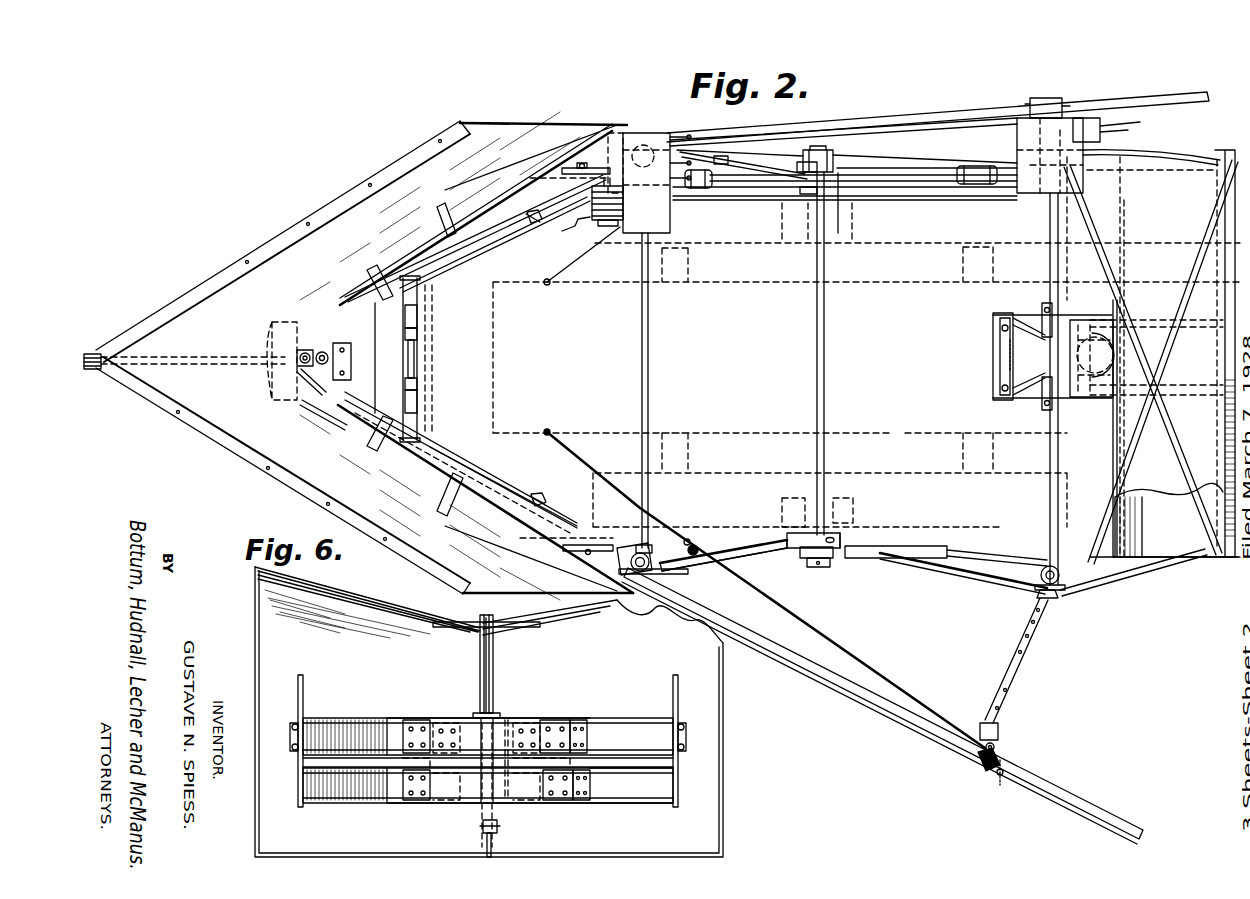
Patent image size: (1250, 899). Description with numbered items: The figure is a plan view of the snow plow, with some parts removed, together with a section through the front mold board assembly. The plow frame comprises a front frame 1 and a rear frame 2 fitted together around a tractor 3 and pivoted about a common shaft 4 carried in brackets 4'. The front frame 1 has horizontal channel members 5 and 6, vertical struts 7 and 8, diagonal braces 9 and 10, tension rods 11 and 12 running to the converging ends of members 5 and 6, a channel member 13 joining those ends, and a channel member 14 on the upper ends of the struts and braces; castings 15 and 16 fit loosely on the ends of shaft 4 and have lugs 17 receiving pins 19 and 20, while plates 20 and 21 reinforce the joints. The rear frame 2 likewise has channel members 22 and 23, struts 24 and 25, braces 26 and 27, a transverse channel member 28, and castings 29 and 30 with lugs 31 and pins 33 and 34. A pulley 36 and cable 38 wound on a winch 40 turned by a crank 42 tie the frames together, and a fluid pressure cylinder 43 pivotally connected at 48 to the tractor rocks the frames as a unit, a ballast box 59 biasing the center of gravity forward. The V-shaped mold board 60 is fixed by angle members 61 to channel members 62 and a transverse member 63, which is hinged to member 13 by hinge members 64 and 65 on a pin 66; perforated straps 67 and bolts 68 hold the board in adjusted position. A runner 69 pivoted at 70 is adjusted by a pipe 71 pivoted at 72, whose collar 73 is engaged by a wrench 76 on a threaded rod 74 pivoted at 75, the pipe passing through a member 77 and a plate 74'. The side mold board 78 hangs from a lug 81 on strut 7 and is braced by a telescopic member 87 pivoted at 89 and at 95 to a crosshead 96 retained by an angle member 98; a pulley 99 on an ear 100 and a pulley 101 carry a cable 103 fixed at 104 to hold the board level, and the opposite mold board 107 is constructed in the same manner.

In FIG. 2, the front frame 1 is at (642, 134).
In FIG. 2, the rear frame 2 is at (1046, 97).
In FIG. 2, the tractor 3 is at (905, 434).
In FIG. 2, the shaft 4 is at (967, 350).
In FIG. 2, the bearing members or brackets 4' is at (809, 365).
In FIG. 2, the horizontal channel member 5 is at (687, 539).
In FIG. 6, the horizontal channel member 5 is at (347, 800).
In FIG. 2, the horizontal channel member 6 is at (718, 158).
In FIG. 6, the horizontal channel member 6 is at (647, 796).
In FIG. 2, the vertical strut 7 is at (648, 548).
In FIG. 2, the vertical strut 8 is at (657, 140).
In FIG. 2, the diagonal brace 9 is at (728, 560).
In FIG. 2, the diagonal brace 10 is at (748, 166).
In FIG. 2, the tension rod 11 is at (520, 488).
In FIG. 2, the tension rod 12 is at (518, 233).
In FIG. 2, the channel member 13 is at (420, 332).
In FIG. 6, the channel member 13 is at (470, 797).
In FIG. 2, the channel member 14 is at (641, 330).
In FIG. 2, the casting 15 is at (795, 548).
In FIG. 2, the casting 16 is at (797, 166).
In FIG. 2, the spaced lugs 17 is at (839, 533).
In FIG. 2, the pin 19 is at (835, 540).
In FIG. 2, the pin 20 is at (839, 183).
In FIG. 2, the plate 21 is at (680, 573).
In FIG. 2, the horizontal channel member 22 is at (963, 546).
In FIG. 2, the horizontal channel member 23 is at (940, 171).
In FIG. 2, the vertical strut 24 is at (1057, 583).
In FIG. 2, the vertical strut 25 is at (1058, 140).
In FIG. 2, the diagonal brace 26 is at (975, 154).
In FIG. 2, the diagonal brace 27 is at (1177, 160).
In FIG. 2, the transverse channel member 28 is at (1049, 265).
In FIG. 2, the casting 29 is at (832, 562).
In FIG. 2, the casting 30 is at (838, 158).
In FIG. 2, the spaced lugs 31 is at (795, 154).
In FIG. 2, the pin 33 is at (806, 558).
In FIG. 2, the pin 34 is at (803, 195).
In FIG. 2, the pulley 36 is at (700, 190).
In FIG. 2, the cable 38 is at (748, 200).
In FIG. 2, the winch 40 is at (593, 206).
In FIG. 2, the crank 42 is at (563, 231).
In FIG. 2, the fluid pressure cylinder 43 is at (1105, 348).
In FIG. 2, the pivotal connection 48 is at (1055, 356).
In FIG. 2, the ballast box 59 is at (1152, 357).
In FIG. 2, the V-shaped mold board 60 is at (173, 395).
In FIG. 6, the V-shaped mold board 60 is at (436, 623).
In FIG. 2, the angle members 61 is at (450, 213).
In FIG. 2, the channel members 62 is at (503, 215).
In FIG. 6, the channel members 62 is at (370, 718).
In FIG. 2, the transverse channel member 63 is at (428, 370).
In FIG. 6, the transverse channel member 63 is at (508, 720).
In FIG. 2, the hinge member 64 is at (405, 322).
In FIG. 6, the hinge member 64 is at (407, 762).
In FIG. 2, the hinge member 65 is at (405, 340).
In FIG. 6, the hinge member 65 is at (447, 768).
In FIG. 2, the pin 66 is at (408, 358).
In FIG. 6, the pin 66 is at (500, 760).
In FIG. 2, the perforated strap 67 is at (563, 167).
In FIG. 6, the perforated strap 67 is at (303, 686).
In FIG. 2, the bolts 68 is at (582, 162).
In FIG. 6, the bolts 68 is at (303, 746).
In FIG. 6, the runner 69 is at (493, 843).
In FIG. 2, the pivot 70 is at (95, 352).
In FIG. 2, the pipe 71 is at (278, 370).
In FIG. 6, the pipe 71 is at (494, 669).
In FIG. 6, the pivotal connection 72 is at (500, 827).
In FIG. 2, the collar 73 is at (300, 355).
In FIG. 2, the screw threaded rod 74 is at (346, 358).
In FIG. 6, the screw threaded rod 74 is at (470, 664).
In FIG. 2, the plate 74' is at (323, 416).
In FIG. 6, the plate 74' is at (490, 613).
In FIG. 6, the pivotal connection 75 is at (478, 713).
In FIG. 2, the adjusting nut or wrench 76 is at (304, 380).
In FIG. 2, the member 77 is at (272, 336).
In FIG. 2, the side mold board 78 is at (772, 645).
In FIG. 2, the apertured lug 81 is at (638, 550).
In FIG. 2, the member 87 is at (1020, 658).
In FIG. 2, the pivotal connection 89 is at (1048, 599).
In FIG. 2, the pivotal connection 95 is at (998, 730).
In FIG. 2, the crosshead 96 is at (995, 745).
In FIG. 2, the angle member 98 is at (920, 722).
In FIG. 2, the pulley 99 is at (982, 758).
In FIG. 2, the ear 100 is at (1000, 776).
In FIG. 2, the pulley 101 is at (698, 545).
In FIG. 2, the cable 103 is at (590, 455).
In FIG. 2, the fixed point 104 is at (547, 430).
In FIG. 2, the mold board 107 is at (1147, 98).